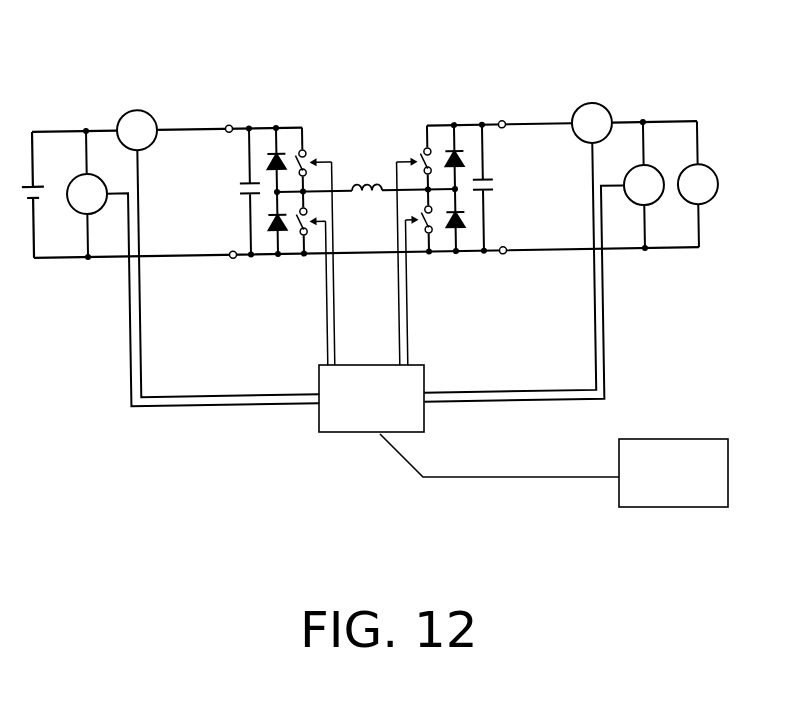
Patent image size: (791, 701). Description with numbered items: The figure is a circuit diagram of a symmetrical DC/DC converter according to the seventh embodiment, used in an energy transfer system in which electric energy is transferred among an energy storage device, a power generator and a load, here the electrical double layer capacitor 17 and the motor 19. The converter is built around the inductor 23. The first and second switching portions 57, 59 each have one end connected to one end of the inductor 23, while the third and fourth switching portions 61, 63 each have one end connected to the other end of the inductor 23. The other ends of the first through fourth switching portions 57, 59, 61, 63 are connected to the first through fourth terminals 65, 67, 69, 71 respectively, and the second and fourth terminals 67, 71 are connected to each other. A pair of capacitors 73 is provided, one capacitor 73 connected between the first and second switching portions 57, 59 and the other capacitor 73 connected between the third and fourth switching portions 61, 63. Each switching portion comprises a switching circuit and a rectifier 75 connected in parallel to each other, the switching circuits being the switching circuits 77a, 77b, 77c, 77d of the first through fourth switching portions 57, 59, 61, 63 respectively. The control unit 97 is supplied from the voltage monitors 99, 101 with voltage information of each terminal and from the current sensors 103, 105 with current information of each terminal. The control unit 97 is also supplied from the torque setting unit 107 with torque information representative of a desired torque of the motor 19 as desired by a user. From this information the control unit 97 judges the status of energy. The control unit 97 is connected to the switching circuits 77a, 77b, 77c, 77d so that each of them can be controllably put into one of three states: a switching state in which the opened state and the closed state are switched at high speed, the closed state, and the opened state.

The electrical double layer capacitor 17 is at (32, 256).
The motor 19 is at (702, 263).
The inductor 23 is at (365, 182).
The first switching portion 57 is at (220, 73).
The second switching portion 59 is at (210, 326).
The third switching portion 61 is at (507, 73).
The fourth switching portion 63 is at (523, 326).
The first terminal 65 is at (230, 124).
The second terminal 67 is at (231, 254).
The third terminal 69 is at (506, 125).
The fourth terminal 71 is at (504, 254).
The capacitor 73 is at (238, 188).
The rectifier 75 is at (269, 148).
The switching circuit 77a is at (306, 124).
The switching circuit 77b is at (304, 258).
The switching circuit 77c is at (428, 123).
The switching circuit 77d is at (428, 256).
The control unit 97 is at (365, 433).
The voltage monitor 99 is at (70, 165).
The voltage monitor 101 is at (658, 162).
The current sensor 103 is at (139, 102).
The current sensor 105 is at (593, 106).
The torque setting unit 107 is at (673, 439).